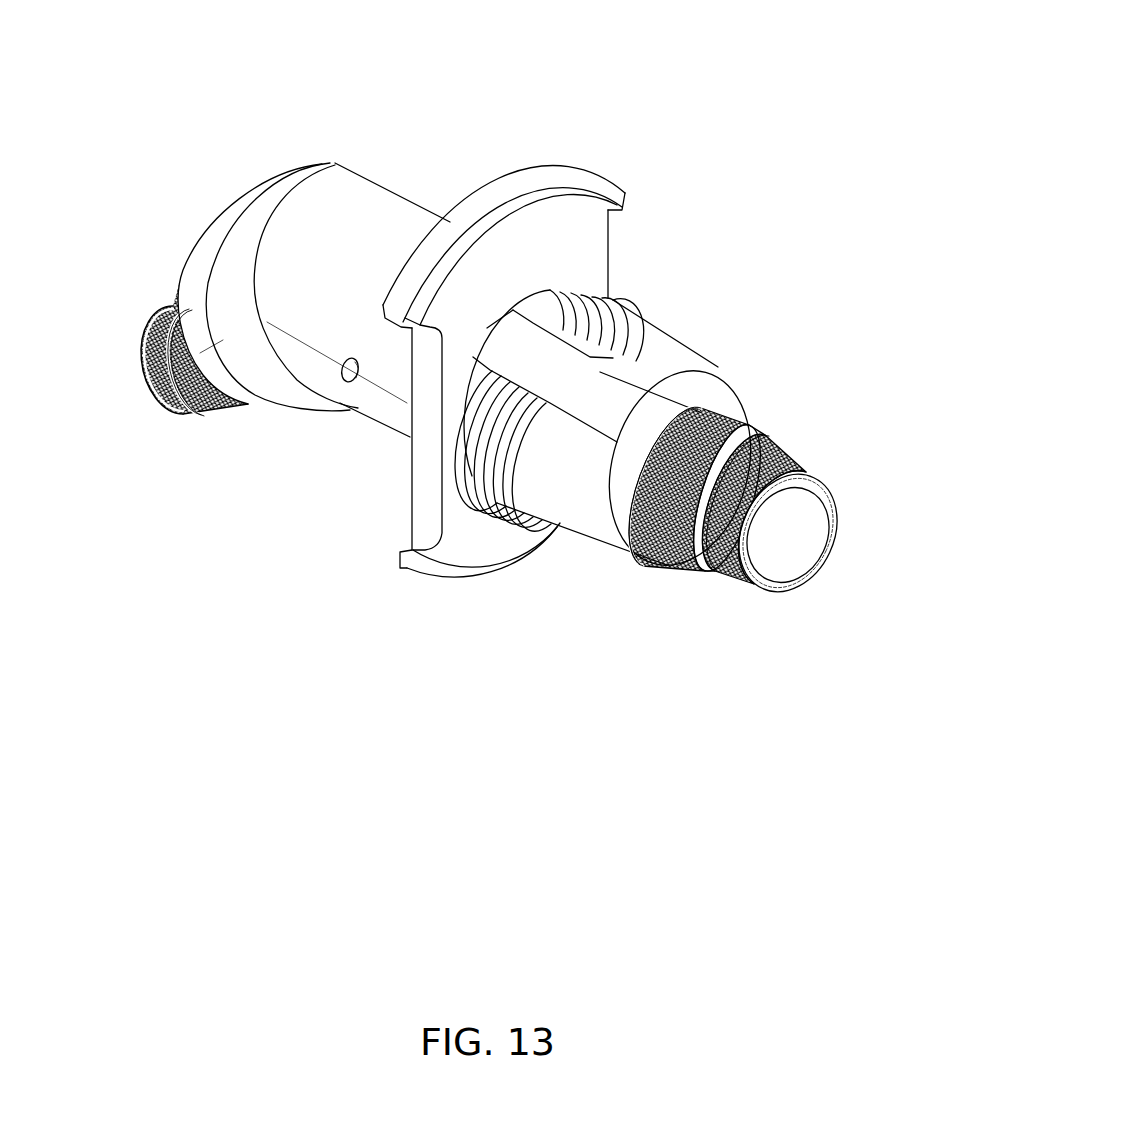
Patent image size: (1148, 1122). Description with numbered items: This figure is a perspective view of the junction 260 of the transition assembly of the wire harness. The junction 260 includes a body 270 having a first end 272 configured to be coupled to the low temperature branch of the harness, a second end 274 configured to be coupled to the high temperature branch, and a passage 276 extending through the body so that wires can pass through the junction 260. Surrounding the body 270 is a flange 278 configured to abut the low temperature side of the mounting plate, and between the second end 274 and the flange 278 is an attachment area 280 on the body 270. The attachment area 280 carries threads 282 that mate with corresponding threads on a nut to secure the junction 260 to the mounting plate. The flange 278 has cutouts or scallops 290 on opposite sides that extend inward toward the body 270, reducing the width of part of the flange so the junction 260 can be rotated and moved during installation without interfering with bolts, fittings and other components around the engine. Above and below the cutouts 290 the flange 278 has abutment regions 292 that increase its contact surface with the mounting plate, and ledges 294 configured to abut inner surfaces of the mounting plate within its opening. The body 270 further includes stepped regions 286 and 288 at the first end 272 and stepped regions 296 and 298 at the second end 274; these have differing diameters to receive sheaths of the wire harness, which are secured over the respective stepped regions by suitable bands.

The junction 260 is at (516, 364).
The body 270 is at (368, 414).
The first end 272 is at (183, 417).
The second end 274 is at (757, 597).
The passage 276 is at (797, 537).
The flange 278 is at (618, 247).
The attachment area 280 is at (668, 343).
The threads 282 is at (628, 303).
The stepped region 286 is at (147, 325).
The stepped region 288 is at (167, 310).
The cutouts 290 is at (423, 503).
The abutment regions 292 is at (552, 182).
The ledges 294 is at (605, 195).
The stepped region 296 is at (797, 462).
The stepped region 298 is at (745, 425).